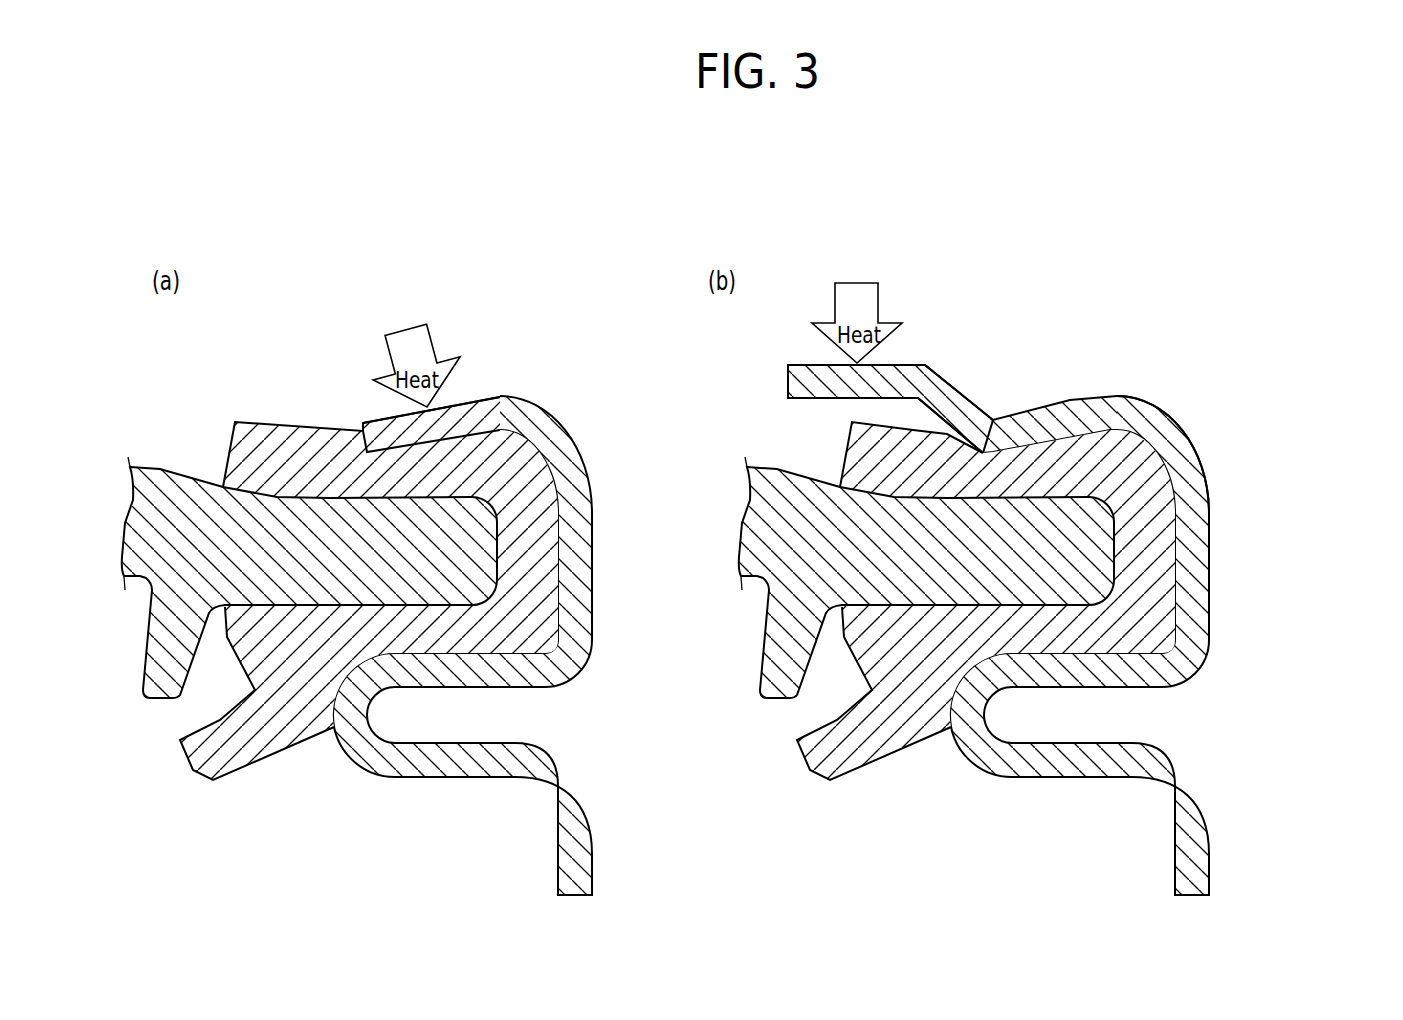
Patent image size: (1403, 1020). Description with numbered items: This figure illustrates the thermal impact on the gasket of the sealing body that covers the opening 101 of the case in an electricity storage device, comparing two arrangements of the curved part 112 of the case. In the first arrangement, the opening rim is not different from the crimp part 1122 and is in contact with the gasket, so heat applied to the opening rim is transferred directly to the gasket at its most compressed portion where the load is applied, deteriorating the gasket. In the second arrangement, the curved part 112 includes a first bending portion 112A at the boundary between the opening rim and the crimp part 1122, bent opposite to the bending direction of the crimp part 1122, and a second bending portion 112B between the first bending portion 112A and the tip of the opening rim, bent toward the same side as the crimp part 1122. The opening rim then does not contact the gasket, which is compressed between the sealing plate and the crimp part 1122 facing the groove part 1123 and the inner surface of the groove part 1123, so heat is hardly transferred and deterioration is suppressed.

The opening 101 is at (741, 410).
The curved part 112 is at (1085, 542).
The first bending portion 112A is at (993, 418).
The second bending portion 112B is at (927, 363).
The crimp part 1122 is at (1197, 456).
The groove part 1123 is at (1266, 706).